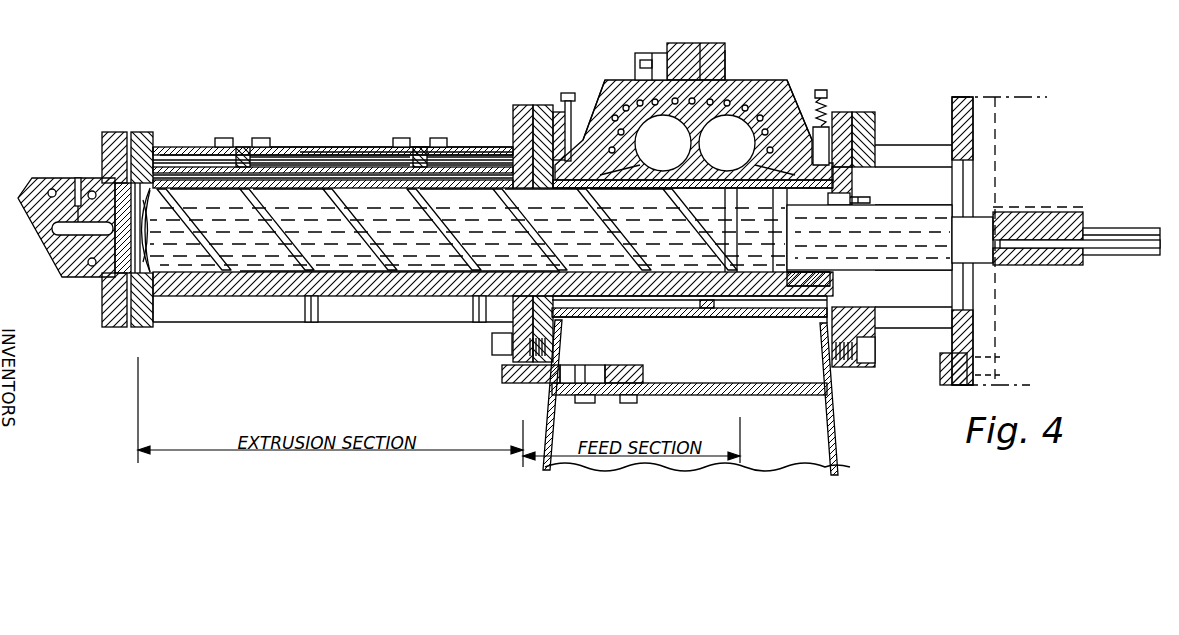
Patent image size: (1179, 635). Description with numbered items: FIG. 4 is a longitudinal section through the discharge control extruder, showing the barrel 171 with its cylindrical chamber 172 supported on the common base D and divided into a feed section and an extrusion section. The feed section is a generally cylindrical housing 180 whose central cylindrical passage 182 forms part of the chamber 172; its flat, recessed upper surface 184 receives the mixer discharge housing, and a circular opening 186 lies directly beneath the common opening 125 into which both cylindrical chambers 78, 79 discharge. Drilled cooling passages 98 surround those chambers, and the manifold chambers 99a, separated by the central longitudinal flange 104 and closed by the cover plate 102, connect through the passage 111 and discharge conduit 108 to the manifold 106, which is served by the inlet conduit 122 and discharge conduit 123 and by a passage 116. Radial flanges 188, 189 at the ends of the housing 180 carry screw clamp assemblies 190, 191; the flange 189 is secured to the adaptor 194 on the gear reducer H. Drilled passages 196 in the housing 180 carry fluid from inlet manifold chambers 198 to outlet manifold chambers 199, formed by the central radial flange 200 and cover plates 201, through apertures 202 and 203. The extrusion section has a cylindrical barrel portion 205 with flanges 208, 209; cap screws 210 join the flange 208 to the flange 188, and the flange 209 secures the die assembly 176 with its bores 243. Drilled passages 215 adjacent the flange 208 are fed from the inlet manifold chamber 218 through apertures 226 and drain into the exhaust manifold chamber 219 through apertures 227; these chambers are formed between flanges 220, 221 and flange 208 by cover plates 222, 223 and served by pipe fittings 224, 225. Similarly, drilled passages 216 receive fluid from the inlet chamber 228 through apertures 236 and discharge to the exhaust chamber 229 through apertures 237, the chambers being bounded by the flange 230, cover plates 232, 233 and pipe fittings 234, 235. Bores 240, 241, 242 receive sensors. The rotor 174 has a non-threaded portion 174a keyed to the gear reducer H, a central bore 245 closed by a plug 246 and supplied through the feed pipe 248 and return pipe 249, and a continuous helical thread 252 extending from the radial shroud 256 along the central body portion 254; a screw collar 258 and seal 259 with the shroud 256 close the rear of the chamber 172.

The die assembly 176 is at (40, 176).
The bores 243 is at (78, 176).
The radial flange 209 is at (127, 133).
The apertures 237 is at (162, 165).
The exhaust chamber 229 is at (188, 150).
The pipe fitting 235 is at (228, 140).
The cover plate 233 is at (288, 148).
The cover plate 232 is at (205, 148).
The pipe fitting 234 is at (262, 138).
The flange 230 is at (240, 155).
The inlet chamber 228 is at (296, 162).
The rotor or screw 174 is at (368, 203).
The radial flange 220 is at (318, 160).
The cover plate 222 is at (352, 166).
The radial flange 221 is at (390, 160).
The exhaust manifold chamber 219 is at (378, 150).
The pipe fitting 225 is at (401, 138).
The barrel 171 is at (482, 168).
The inlet manifold chamber 218 is at (455, 152).
The pipe fitting 224 is at (440, 138).
The cover plate 223 is at (472, 162).
The radial flange 208 is at (530, 104).
The radial flange 188 is at (542, 104).
The screw clamp assembly 190 is at (568, 93).
The manifold chambers 99a is at (606, 98).
The passage 116 is at (640, 66).
The inlet conduit 122 is at (642, 56).
The discharge conduit 123 is at (660, 58).
The discharge conduit 108 is at (690, 42).
The manifold 106 is at (722, 44).
The central longitudinal flange 104 is at (720, 80).
The passage 111 is at (738, 77).
The cover plate 102 is at (790, 100).
The screw clamp assembly 191 is at (825, 90).
The radial flange 189 is at (845, 112).
The adaptor 194 is at (885, 144).
The gear reducer H is at (1035, 135).
The cooling passages 98 is at (663, 143).
The common opening 125 is at (727, 143).
The cylindrical chamber 78 is at (630, 158).
The cylindrical chamber 79 is at (762, 158).
The drilled passages 216 is at (228, 192).
The aperture 236 is at (318, 190).
The drilled passages 215 is at (440, 190).
The aperture 226 is at (543, 190).
The upper surface 184 is at (635, 185).
The circular opening 186 is at (728, 185).
The screw collar 258 is at (798, 205).
The seal 259 is at (850, 193).
The non-threaded portion 174a is at (935, 205).
The feed pipe 248 is at (1100, 228).
The return pipe 249 is at (1140, 228).
The plug 246 is at (148, 222).
The aperture 227 is at (345, 222).
The radial shroud 256 is at (798, 266).
The central bore 245 is at (1040, 266).
The bore 240 is at (140, 328).
The central body portion 254 is at (252, 262).
The cylindrical barrel portion 205 is at (286, 298).
The bore 241 is at (313, 318).
The helical thread 252 is at (358, 276).
The cylindrical chamber 172 is at (428, 298).
The bore 242 is at (482, 300).
The cap screws 210 is at (520, 378).
The apertures 203 is at (602, 320).
The outlet manifold chambers 199 is at (658, 308).
The central cylindrical passage 182 is at (676, 300).
The central radial flange 200 is at (722, 318).
The cover plates 201 is at (706, 309).
The inlet manifold chambers 198 is at (775, 300).
The drilled passages 196 is at (780, 318).
The apertures 202 is at (805, 300).
The housing 180 is at (835, 365).
The common base D is at (838, 444).